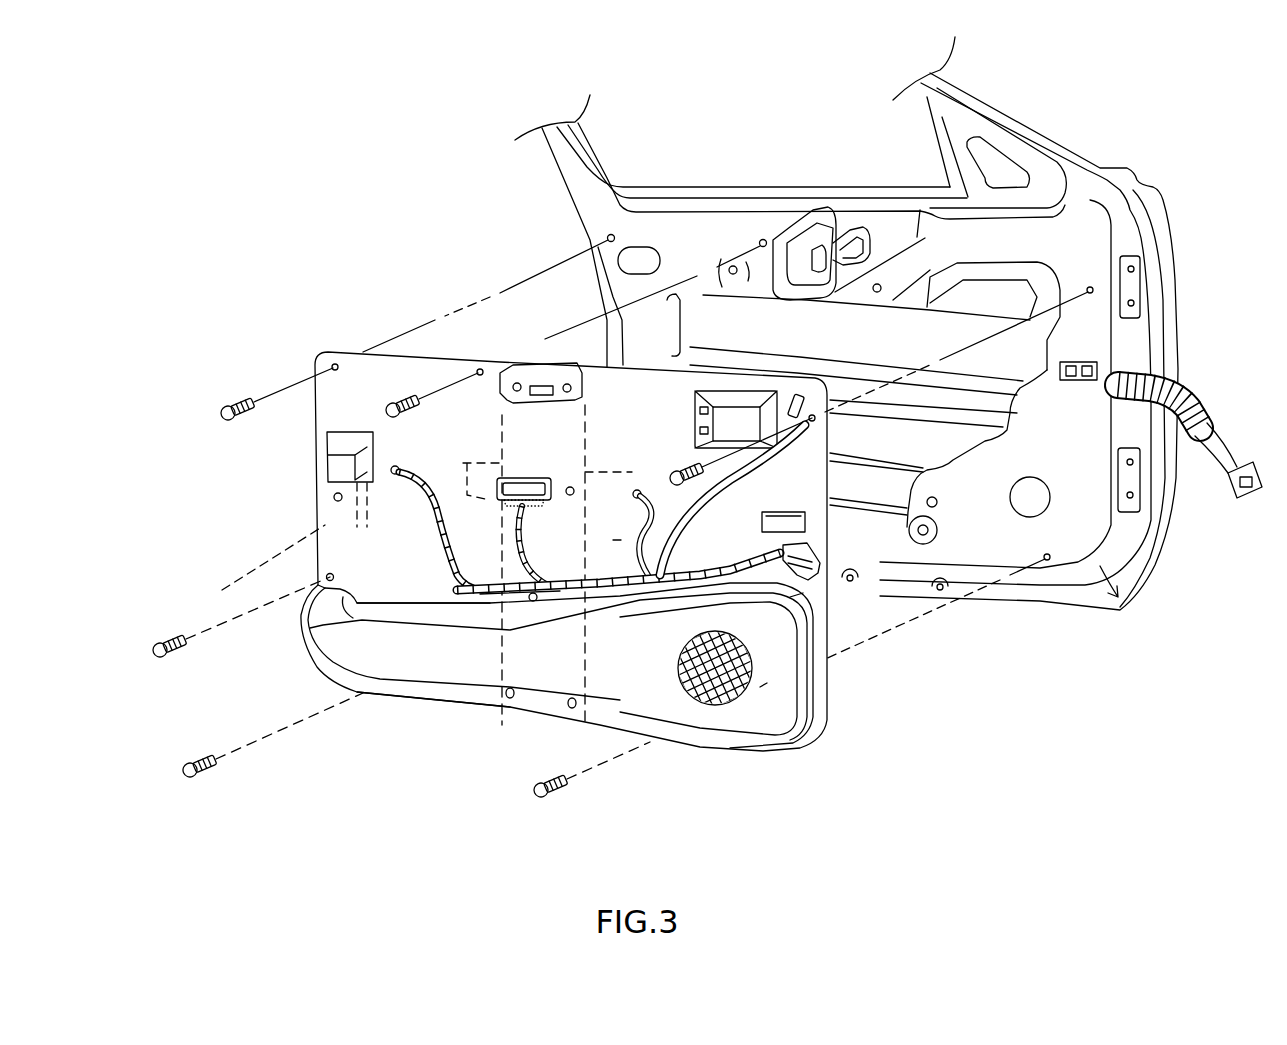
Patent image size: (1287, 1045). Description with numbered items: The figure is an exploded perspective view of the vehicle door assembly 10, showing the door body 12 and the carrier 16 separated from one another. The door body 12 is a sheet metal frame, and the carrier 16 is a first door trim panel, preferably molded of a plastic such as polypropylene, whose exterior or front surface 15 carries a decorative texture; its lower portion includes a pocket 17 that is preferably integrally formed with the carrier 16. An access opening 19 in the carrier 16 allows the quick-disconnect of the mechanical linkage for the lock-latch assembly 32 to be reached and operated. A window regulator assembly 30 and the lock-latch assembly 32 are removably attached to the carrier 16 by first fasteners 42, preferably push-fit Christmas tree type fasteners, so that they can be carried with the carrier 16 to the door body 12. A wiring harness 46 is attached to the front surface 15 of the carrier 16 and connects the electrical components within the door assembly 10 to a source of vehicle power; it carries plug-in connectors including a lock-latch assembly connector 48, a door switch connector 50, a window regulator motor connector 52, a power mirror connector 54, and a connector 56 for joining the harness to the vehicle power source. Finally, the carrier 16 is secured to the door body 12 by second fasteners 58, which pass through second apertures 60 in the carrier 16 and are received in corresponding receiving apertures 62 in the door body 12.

The vehicle door assembly 10 is at (530, 112).
The door body 12 is at (1047, 127).
The front surface 15 is at (530, 718).
The carrier 16 is at (822, 722).
The pocket 17 is at (440, 620).
The access opening 19 is at (337, 435).
The window regulator assembly 30 is at (553, 365).
The lock-latch assembly 32 is at (258, 563).
The first fasteners 42 is at (334, 499).
The wiring harness 46 is at (490, 597).
The lock-latch assembly connector 48 is at (393, 468).
The door switch connector 50 is at (518, 478).
The window regulator motor connector 52 is at (640, 492).
The power mirror connector 54 is at (799, 394).
The harness connector 56 is at (812, 577).
The second fasteners 58 is at (182, 770).
The second apertures 60 is at (332, 365).
The receiving apertures 62 is at (612, 235).